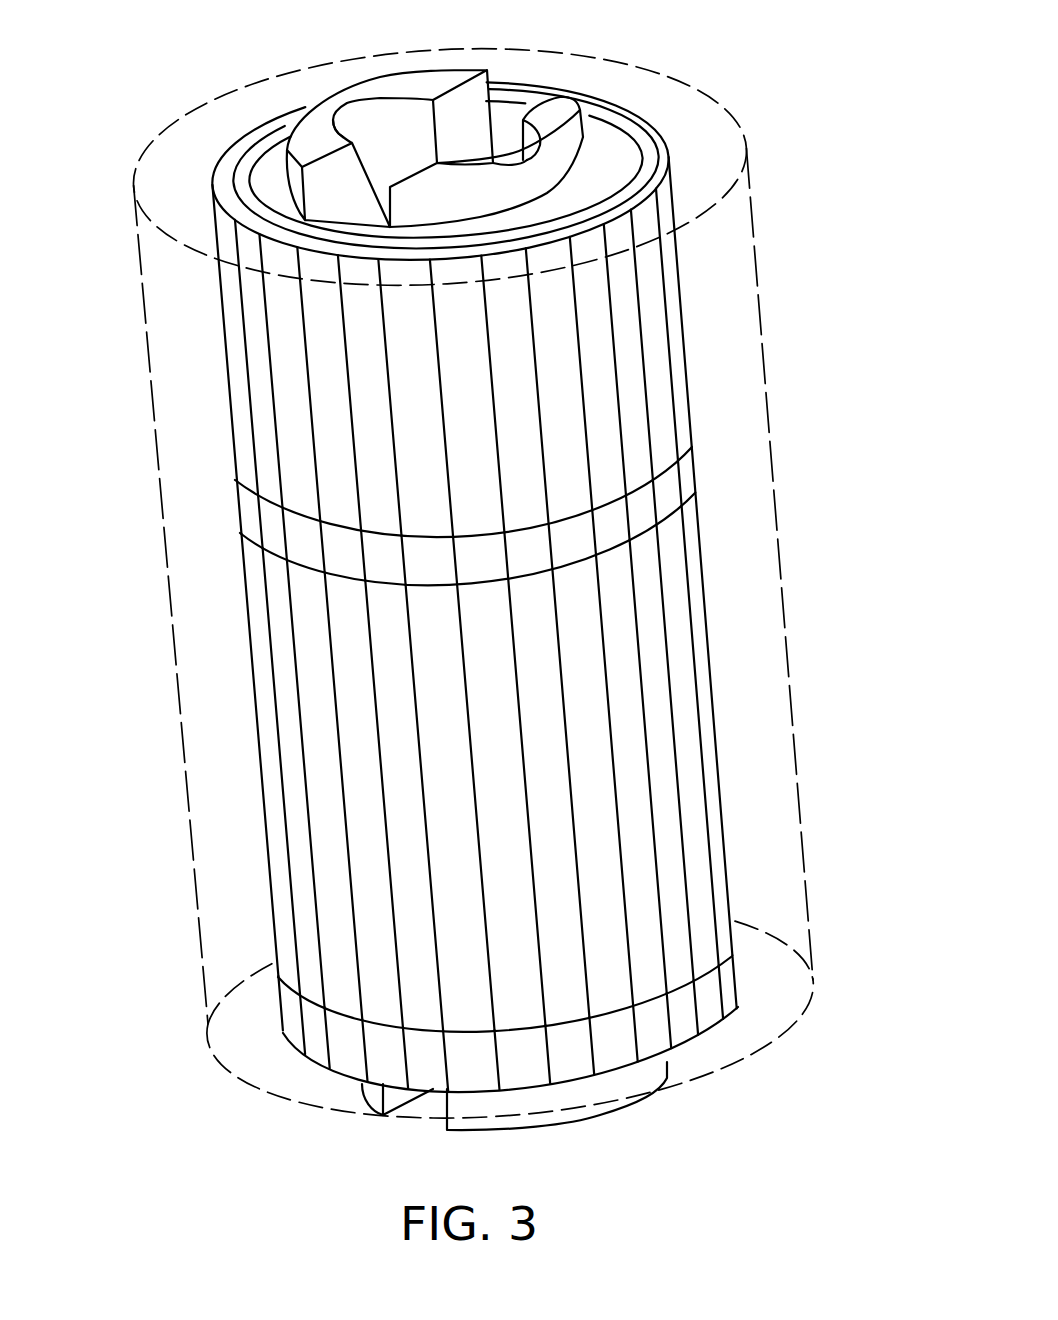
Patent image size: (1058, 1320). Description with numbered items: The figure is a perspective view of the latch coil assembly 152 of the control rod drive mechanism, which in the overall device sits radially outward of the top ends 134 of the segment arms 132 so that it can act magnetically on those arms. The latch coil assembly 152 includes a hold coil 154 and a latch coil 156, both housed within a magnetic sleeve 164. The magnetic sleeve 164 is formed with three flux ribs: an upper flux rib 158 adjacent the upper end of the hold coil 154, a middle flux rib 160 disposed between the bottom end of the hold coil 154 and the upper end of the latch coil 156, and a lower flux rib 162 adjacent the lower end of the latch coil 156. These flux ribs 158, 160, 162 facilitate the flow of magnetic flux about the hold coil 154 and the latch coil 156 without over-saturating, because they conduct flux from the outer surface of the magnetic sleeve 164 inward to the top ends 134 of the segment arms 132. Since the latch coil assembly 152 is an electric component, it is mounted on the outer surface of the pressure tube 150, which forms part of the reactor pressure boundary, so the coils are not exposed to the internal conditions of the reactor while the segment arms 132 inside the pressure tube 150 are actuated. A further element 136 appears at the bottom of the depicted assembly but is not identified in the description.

The segment arms 132 is at (455, 117).
The top ends of segment arms 134 is at (313, 140).
The bottom terminal 136 is at (547, 1127).
The pressure tube 150 is at (253, 160).
The latch coil assembly 152 is at (157, 677).
The hold coil 154 is at (714, 334).
The latch coil 156 is at (748, 767).
The upper flux rib 158 is at (690, 183).
The middle flux rib 160 is at (722, 458).
The lower flux rib 162 is at (770, 969).
The magnetic sleeve 164 is at (750, 595).